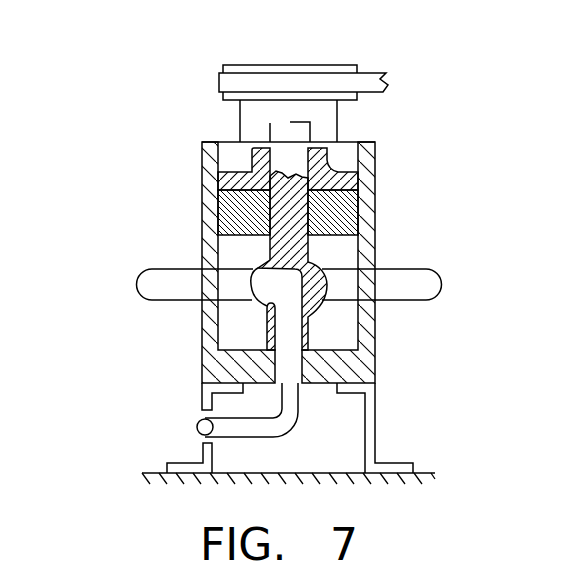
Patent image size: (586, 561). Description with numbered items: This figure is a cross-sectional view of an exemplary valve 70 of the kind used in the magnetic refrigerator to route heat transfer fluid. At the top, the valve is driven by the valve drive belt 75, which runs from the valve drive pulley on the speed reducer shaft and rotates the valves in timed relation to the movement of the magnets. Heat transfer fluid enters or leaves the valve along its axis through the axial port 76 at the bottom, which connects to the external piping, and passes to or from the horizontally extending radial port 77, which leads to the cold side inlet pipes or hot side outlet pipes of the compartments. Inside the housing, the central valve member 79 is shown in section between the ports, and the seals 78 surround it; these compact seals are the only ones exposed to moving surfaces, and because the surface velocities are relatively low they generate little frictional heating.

The valve assembly 70 is at (148, 138).
The valve drive belt 75 is at (378, 83).
The axial port 76 is at (197, 427).
The radial port 77 is at (148, 290).
The seals 78 is at (225, 257).
The valve head 79 is at (288, 323).